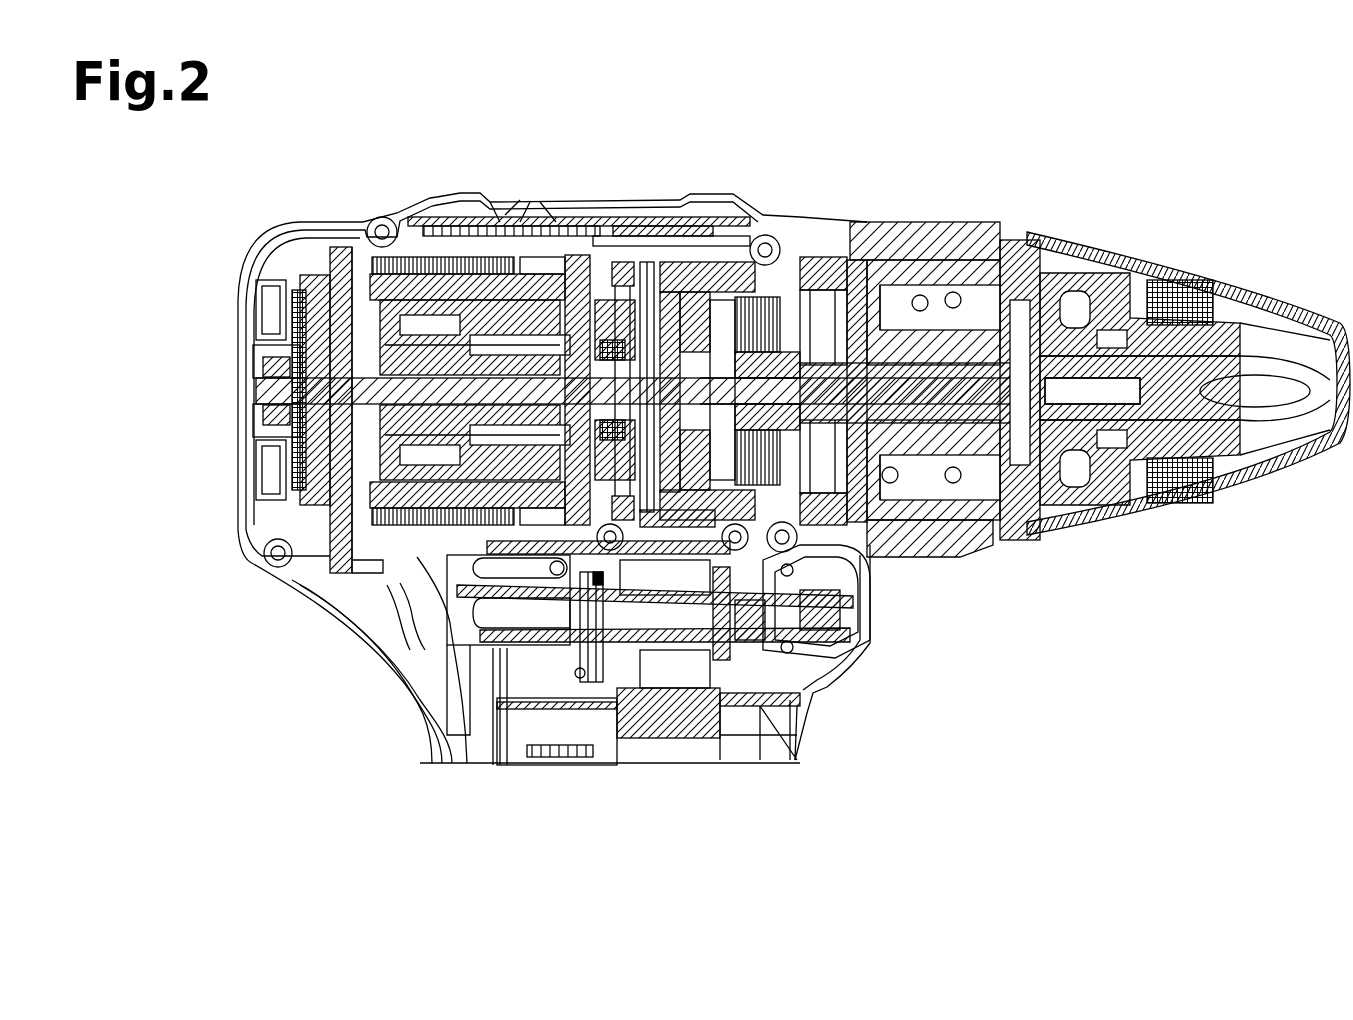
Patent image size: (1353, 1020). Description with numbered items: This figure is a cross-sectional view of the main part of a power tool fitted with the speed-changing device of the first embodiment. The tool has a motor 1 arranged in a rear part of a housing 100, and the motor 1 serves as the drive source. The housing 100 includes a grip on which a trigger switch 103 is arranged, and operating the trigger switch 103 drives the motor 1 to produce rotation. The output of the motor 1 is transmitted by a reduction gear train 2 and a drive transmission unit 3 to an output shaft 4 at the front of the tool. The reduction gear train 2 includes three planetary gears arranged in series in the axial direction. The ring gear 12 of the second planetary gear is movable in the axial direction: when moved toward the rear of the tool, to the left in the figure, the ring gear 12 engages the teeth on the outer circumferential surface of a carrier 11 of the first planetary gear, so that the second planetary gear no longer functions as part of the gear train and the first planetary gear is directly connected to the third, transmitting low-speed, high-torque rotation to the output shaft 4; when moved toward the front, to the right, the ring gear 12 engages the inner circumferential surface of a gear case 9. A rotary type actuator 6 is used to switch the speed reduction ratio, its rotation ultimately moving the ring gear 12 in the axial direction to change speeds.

The motor 1 is at (443, 347).
The reduction gear train 2 is at (713, 655).
The drive transmission unit 3 is at (950, 480).
The output shaft 4 is at (1100, 253).
The rotary type actuator 6 is at (850, 650).
The gear case 9 is at (683, 267).
The carrier 11 is at (625, 272).
The ring gear 12 is at (650, 262).
The housing 100 is at (242, 308).
The trigger switch 103 is at (800, 727).